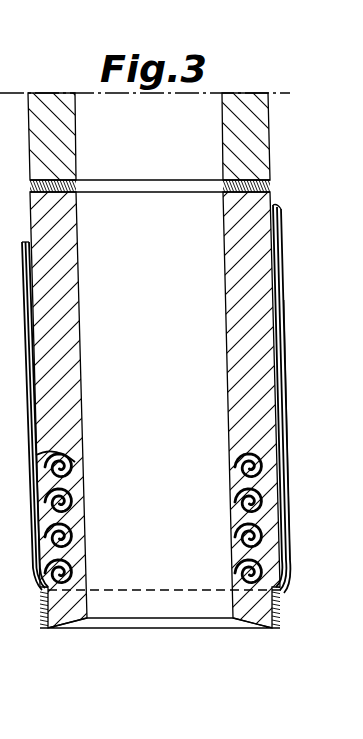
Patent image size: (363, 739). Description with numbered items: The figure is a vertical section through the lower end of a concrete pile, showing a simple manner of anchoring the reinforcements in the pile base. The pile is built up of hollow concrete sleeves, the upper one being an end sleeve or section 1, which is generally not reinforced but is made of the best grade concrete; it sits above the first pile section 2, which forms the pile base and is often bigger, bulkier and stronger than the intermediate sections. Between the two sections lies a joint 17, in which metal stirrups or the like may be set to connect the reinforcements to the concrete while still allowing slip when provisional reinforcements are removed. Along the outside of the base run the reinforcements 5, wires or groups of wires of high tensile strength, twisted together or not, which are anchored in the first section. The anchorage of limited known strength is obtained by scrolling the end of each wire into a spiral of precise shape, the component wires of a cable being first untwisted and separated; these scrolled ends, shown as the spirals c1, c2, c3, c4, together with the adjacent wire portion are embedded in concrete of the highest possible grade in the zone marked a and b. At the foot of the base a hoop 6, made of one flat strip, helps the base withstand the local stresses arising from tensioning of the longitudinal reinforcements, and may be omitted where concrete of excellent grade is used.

The end sleeve or section 1 is at (257, 131).
The joint 17 is at (270, 184).
The anchorage zone portion a is at (38, 297).
The first pile section 2 is at (250, 297).
The reinforcement 5 is at (288, 408).
The anchorage zone portion b is at (73, 437).
The scrolled wire end spiral c1 is at (75, 472).
The scrolled wire end spiral c2 is at (75, 507).
The scrolled wire end spiral c3 is at (75, 542).
The scrolled wire end spiral c4 is at (75, 577).
The hoop 6 is at (281, 598).